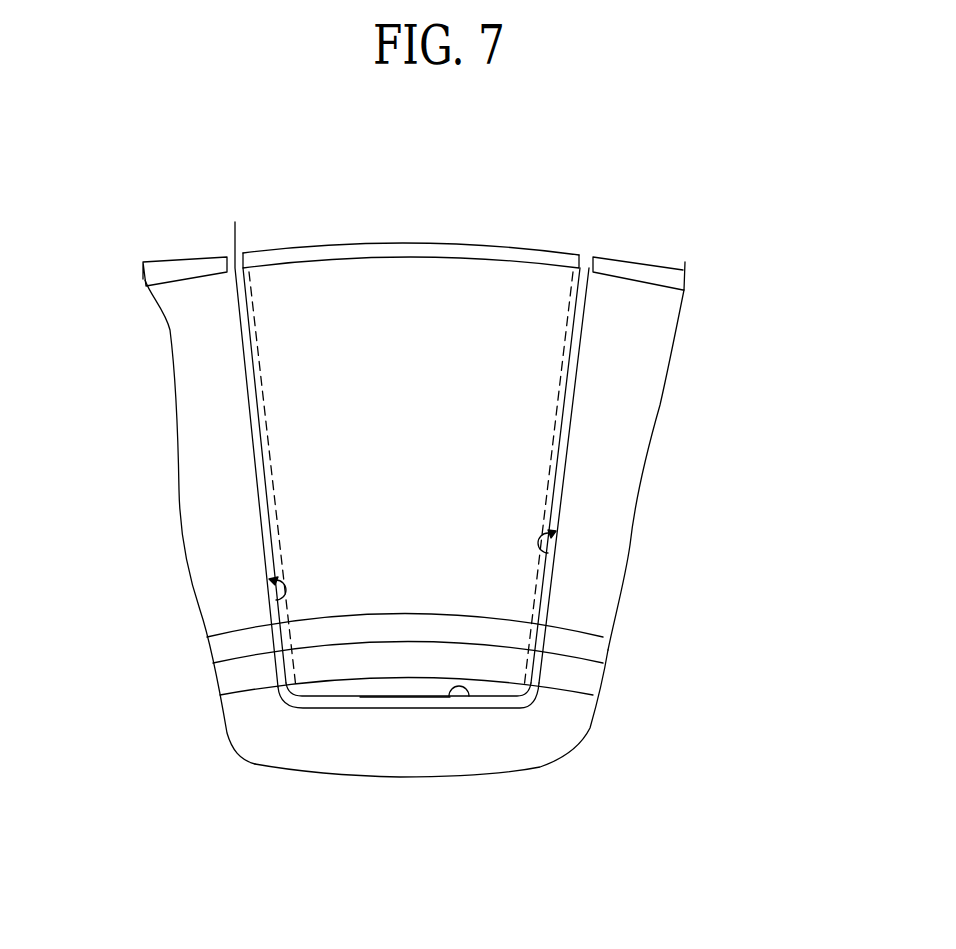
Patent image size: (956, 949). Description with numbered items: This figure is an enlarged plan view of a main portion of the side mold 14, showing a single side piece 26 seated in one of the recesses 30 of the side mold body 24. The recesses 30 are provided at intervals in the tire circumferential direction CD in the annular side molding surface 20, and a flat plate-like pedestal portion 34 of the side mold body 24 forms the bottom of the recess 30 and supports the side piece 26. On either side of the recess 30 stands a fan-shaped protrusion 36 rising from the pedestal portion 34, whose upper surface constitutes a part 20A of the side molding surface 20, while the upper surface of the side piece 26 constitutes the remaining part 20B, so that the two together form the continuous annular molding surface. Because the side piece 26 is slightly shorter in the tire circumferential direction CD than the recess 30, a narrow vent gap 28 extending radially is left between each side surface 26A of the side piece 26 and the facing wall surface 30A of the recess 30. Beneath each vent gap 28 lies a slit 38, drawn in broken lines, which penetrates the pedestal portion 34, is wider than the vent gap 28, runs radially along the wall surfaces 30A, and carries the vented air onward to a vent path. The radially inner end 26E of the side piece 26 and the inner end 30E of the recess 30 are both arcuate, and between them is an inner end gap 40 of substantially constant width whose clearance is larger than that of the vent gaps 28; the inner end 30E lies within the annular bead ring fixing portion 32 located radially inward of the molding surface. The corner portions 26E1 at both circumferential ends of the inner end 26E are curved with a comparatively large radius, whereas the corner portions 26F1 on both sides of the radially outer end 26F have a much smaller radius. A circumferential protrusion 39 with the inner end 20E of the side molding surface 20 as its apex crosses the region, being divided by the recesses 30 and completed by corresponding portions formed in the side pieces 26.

The side mold 14 is at (400, 181).
The side molding surface 20 is at (646, 470).
The part of side molding surface on protrusion 20A is at (630, 414).
The part of side molding surface on side piece 20B is at (513, 388).
The inner end of side molding surface 20E is at (462, 644).
The side mold body 24 is at (560, 722).
The side piece 26 is at (411, 284).
The side surface of side piece 26A is at (254, 427).
The inner end of side piece 26E is at (360, 697).
The corner portion of inner end 26E1 is at (285, 694).
The outer end of side piece 26F is at (338, 264).
The corner portion of outer end 26F1 is at (601, 221).
The vent gap 28 is at (263, 520).
The recess 30 is at (530, 245).
The wall surface of recess 30A is at (268, 600).
The inner end of recess 30E is at (464, 708).
The bead ring fixing portion 32 is at (250, 734).
The pedestal portion 34 is at (484, 256).
The protrusion 36 is at (180, 302).
The slit 38 is at (255, 360).
The protrusion 39 is at (590, 647).
The inner end gap 40 is at (403, 703).
The tire circumferential direction CD is at (313, 175).